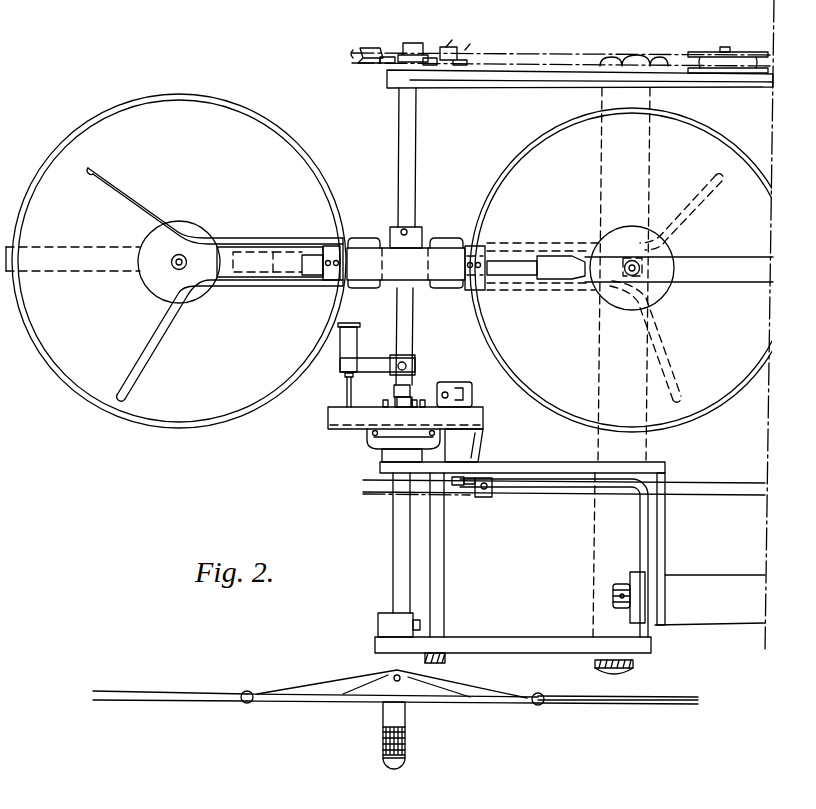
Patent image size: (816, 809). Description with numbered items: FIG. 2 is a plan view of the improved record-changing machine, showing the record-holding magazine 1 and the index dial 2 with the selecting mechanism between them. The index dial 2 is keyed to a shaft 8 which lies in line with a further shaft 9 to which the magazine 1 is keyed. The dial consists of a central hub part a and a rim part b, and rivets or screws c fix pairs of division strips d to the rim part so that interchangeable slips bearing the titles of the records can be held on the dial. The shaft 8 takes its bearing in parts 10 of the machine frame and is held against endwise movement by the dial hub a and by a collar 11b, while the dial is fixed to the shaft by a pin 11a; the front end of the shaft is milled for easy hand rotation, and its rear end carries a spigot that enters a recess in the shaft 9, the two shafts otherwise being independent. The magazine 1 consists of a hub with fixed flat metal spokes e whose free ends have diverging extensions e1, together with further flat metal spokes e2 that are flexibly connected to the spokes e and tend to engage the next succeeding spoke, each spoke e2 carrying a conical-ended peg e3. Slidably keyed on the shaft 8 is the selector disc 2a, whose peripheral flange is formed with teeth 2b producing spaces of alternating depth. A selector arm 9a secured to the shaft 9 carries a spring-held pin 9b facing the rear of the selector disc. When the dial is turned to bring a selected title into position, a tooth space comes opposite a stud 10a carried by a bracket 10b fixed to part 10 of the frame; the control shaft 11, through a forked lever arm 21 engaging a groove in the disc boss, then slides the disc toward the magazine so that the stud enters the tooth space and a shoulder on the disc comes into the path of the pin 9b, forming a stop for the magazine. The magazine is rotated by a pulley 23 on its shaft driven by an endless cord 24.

The disc record-holding magazine 1 is at (430, 246).
The index dial 2 is at (365, 706).
The selector disc 2a is at (322, 428).
The teeth 2b is at (416, 402).
The shaft 8 is at (395, 532).
The shaft 9 is at (396, 147).
The selector arm 9a is at (372, 358).
The spring-held pin 9b is at (345, 393).
The machine frame parts 10 is at (554, 460).
The stud 10a is at (456, 384).
The bracket 10b is at (490, 444).
The control shaft 11 is at (572, 491).
The pin 11a is at (402, 684).
The collar 11b is at (378, 620).
The lever arm 21 is at (368, 446).
The pulley 23 is at (364, 62).
The endless cord 24 is at (520, 56).
The central hub part a is at (378, 660).
The rim part b is at (504, 702).
The rivets or screws c is at (243, 705).
The division strips d is at (620, 700).
The flat metal spokes e is at (257, 290).
The diverging extensions e1 is at (130, 192).
The flat metal spokes e2 is at (92, 247).
The peg or stud e3 is at (168, 268).